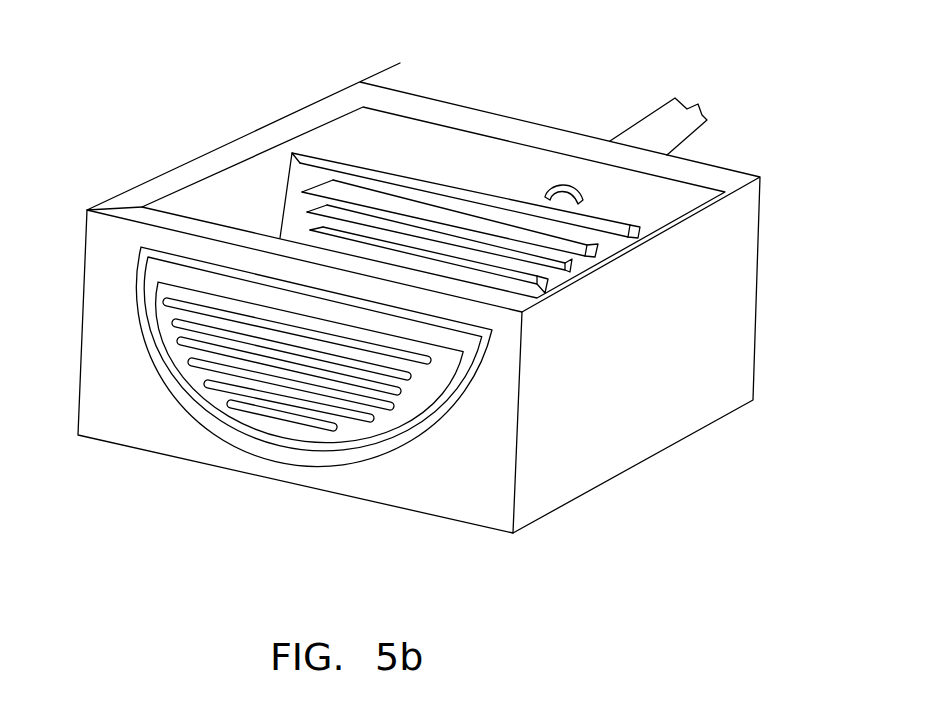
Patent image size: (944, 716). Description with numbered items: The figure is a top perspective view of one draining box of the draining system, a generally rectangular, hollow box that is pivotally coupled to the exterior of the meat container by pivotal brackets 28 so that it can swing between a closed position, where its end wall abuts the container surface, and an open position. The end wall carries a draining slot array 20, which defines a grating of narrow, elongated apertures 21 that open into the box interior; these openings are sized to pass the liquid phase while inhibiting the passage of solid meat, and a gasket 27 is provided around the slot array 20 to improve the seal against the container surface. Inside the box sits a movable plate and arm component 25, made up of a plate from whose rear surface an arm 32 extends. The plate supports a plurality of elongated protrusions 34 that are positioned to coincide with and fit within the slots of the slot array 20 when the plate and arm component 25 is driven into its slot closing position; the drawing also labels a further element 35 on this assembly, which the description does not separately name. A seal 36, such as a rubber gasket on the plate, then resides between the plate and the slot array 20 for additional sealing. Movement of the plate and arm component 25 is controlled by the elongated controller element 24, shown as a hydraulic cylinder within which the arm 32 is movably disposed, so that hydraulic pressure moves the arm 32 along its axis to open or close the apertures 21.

The slot array 20 is at (355, 437).
The apertures 21 is at (390, 410).
The controller element 24 is at (658, 118).
The plate and arm component 25 is at (422, 153).
The gasket 27 is at (141, 251).
The pivotal brackets 28 is at (735, 253).
The arm 32 is at (550, 193).
The elongated protrusions 34 is at (568, 262).
The heat sink fins 35 is at (333, 153).
The seal 36 is at (295, 168).